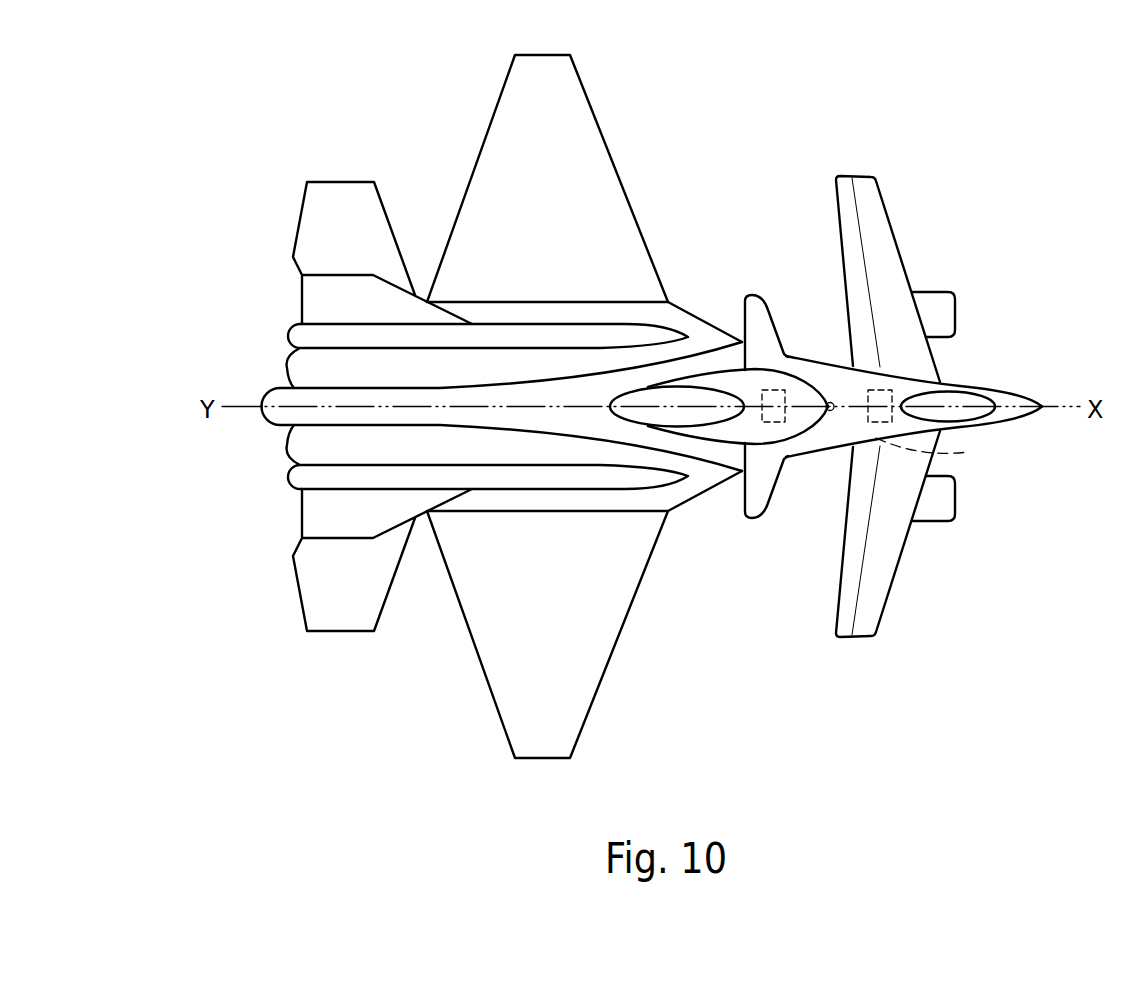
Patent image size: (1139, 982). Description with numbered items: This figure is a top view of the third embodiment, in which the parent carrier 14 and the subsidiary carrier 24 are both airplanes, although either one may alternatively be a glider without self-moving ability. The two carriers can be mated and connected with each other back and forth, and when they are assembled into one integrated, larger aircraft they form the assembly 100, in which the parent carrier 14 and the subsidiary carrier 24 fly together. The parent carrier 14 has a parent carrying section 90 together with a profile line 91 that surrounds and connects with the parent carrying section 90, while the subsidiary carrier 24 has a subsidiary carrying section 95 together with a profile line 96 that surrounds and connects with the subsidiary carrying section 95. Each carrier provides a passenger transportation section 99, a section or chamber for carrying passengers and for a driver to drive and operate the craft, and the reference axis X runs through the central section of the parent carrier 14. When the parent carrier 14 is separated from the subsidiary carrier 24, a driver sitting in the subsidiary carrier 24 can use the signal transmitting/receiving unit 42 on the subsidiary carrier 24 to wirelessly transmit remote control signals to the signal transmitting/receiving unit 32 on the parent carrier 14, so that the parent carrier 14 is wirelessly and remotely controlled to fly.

The assembly 100 is at (730, 198).
The subsidiary carrier 24 is at (487, 128).
The subsidiary carrying section 95 is at (578, 425).
The profile line 96 is at (704, 321).
The profile line 91 is at (839, 362).
The parent carrying section 90 is at (837, 426).
The parent carrier 14 is at (1009, 387).
The passenger transportation section 99 is at (709, 431).
The signal transmitting/receiving unit 42 is at (766, 423).
The signal transmitting/receiving unit 32 is at (942, 458).